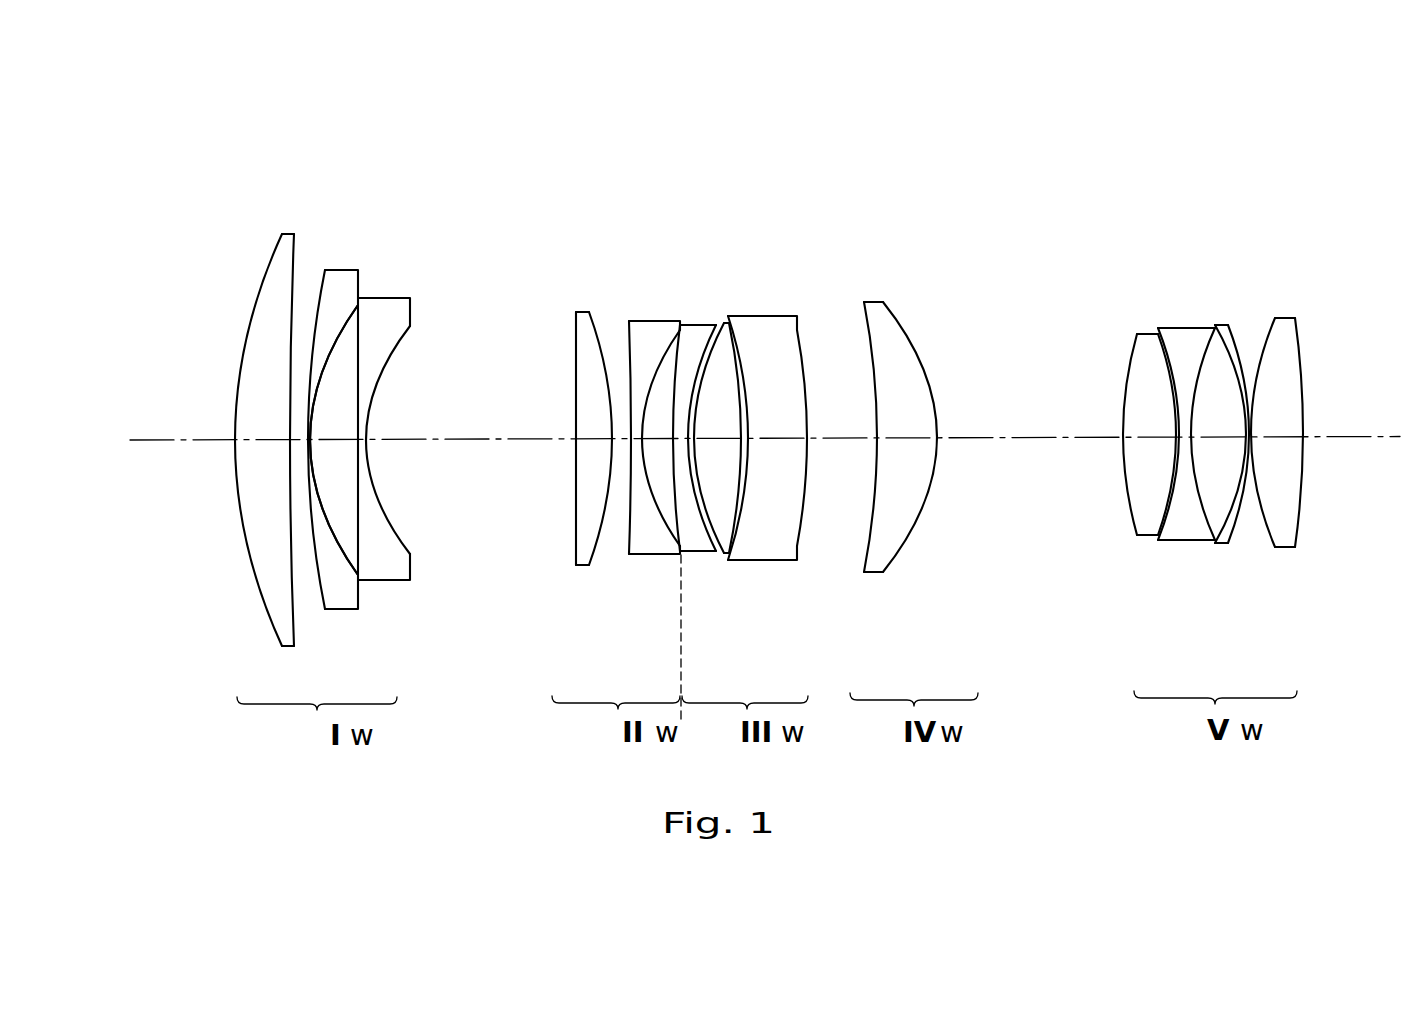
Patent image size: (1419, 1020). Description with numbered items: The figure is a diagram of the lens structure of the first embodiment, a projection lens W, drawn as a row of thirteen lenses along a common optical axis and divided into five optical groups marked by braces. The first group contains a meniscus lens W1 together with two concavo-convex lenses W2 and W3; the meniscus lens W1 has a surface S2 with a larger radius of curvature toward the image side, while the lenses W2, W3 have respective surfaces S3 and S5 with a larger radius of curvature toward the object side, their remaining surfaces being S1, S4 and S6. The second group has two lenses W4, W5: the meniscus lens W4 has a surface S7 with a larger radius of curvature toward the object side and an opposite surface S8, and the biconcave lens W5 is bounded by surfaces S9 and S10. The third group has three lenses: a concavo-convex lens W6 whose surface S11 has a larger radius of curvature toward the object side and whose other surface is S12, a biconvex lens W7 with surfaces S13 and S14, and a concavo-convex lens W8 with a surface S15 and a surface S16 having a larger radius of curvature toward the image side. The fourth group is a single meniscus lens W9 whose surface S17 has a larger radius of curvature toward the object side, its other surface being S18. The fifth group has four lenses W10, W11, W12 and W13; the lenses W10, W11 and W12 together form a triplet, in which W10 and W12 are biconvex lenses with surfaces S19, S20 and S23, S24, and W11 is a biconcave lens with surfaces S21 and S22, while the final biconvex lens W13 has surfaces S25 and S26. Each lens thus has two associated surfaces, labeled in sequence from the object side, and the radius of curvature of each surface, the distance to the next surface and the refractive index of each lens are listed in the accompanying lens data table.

The projection lens W is at (972, 170).
The meniscus lens W1 is at (271, 398).
The concavo-convex lens W2 is at (372, 428).
The concavo-convex lens W3 is at (408, 414).
The meniscus lens W4 is at (564, 426).
The biconcave lens W5 is at (649, 413).
The concavo-convex lens W6 is at (721, 466).
The biconvex lens W7 is at (770, 449).
The concavo-convex lens W8 is at (824, 457).
The meniscus lens W9 is at (906, 427).
The biconvex lens W10 is at (1113, 490).
The biconcave lens W11 is at (1178, 439).
The biconvex lens W12 is at (1269, 423).
The biconvex lens W13 is at (1323, 402).
The lens surface S1 is at (281, 236).
The lens surface S2 is at (295, 253).
The lens surface S3 is at (320, 597).
The lens surface S4 is at (344, 557).
The lens surface S5 is at (361, 332).
The lens surface S6 is at (404, 337).
The lens surface S7 is at (573, 543).
The lens surface S8 is at (595, 557).
The lens surface S9 is at (628, 342).
The lens surface S10 is at (667, 347).
The lens surface S11 is at (680, 532).
The lens surface S12 is at (683, 524).
The lens surface S13 is at (699, 387).
The lens surface S14 is at (721, 324).
The lens surface S15 is at (735, 530).
The lens surface S16 is at (807, 542).
The lens surface S17 is at (875, 383).
The lens surface S18 is at (915, 345).
The lens surface S19 is at (1133, 520).
The lens surface S20 is at (1158, 525).
The lens surface S21 is at (1167, 342).
The lens surface S22 is at (1203, 350).
The lens surface S23 is at (1210, 522).
The lens surface S24 is at (1238, 513).
The lens surface S25 is at (1268, 330).
The lens surface S26 is at (1303, 393).